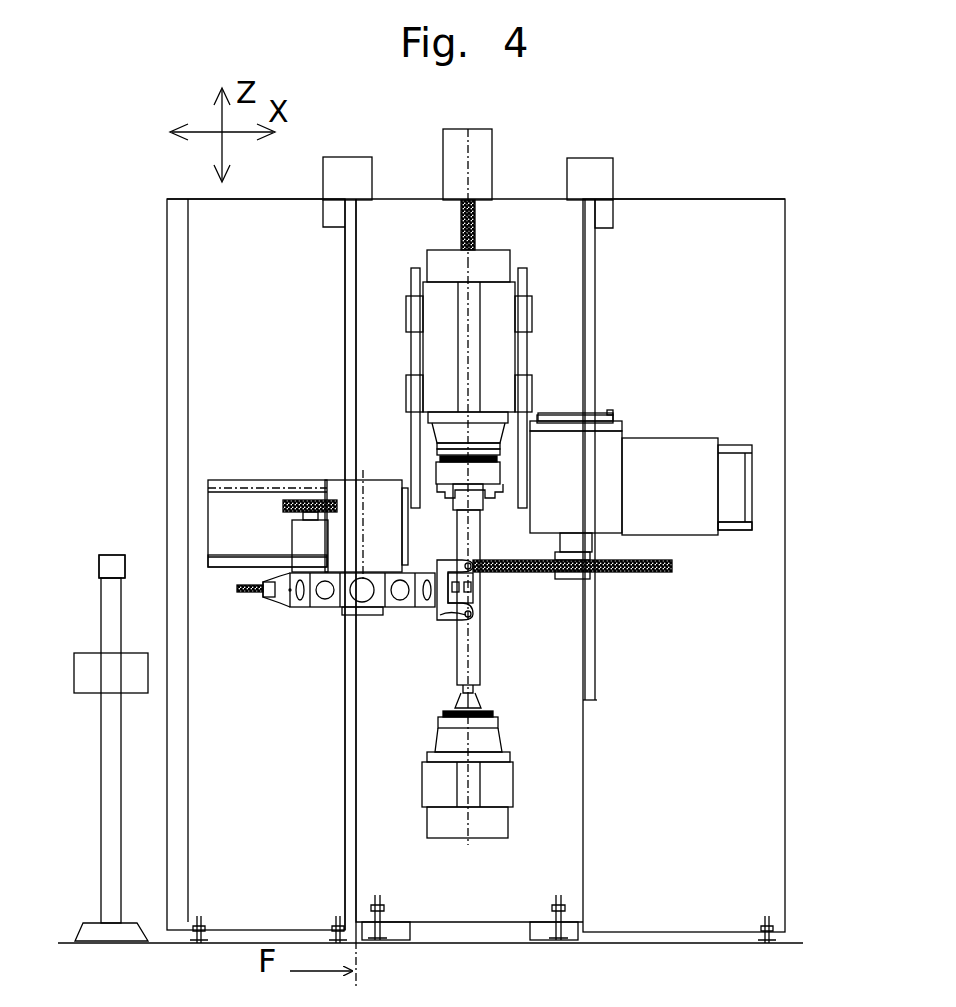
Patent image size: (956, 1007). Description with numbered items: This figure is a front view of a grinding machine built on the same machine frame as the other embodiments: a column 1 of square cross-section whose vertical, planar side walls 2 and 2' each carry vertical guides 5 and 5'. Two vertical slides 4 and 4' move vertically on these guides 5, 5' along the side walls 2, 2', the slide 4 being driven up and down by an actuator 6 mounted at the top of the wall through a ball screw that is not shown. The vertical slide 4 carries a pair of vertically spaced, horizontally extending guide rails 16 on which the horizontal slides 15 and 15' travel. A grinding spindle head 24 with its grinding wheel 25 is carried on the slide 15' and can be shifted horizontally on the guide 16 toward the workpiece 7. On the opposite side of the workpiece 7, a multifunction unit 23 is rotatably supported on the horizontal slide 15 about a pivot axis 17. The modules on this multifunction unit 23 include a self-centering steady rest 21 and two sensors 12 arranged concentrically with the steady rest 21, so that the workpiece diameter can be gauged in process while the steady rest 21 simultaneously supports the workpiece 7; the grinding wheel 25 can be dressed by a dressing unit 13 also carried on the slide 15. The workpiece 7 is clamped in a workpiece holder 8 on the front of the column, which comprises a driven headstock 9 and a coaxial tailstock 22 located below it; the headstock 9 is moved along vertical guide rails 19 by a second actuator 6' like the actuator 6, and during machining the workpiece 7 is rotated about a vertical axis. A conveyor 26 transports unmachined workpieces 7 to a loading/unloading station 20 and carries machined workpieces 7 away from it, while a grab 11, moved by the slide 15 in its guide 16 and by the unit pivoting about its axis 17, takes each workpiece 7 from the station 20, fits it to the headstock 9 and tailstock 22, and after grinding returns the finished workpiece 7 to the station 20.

The column 1 is at (547, 180).
The side wall 2 is at (375, 569).
The side wall 2' is at (684, 565).
The vertical slide 4 is at (230, 523).
The vertical slide 4' is at (748, 457).
The vertical guide rails 5 is at (373, 593).
The vertical guides 5' is at (622, 449).
The actuator 6 is at (364, 172).
The actuator 6' is at (459, 173).
The workpiece 7 is at (480, 657).
The workpiece holder 8 is at (565, 390).
The headstock 9 is at (500, 290).
The grab 11 is at (272, 597).
The sensors 12 is at (466, 614).
The dressing unit 13 is at (285, 503).
The horizontal slide 15 is at (358, 501).
The horizontal slide 15' is at (682, 455).
The guide rails 16 is at (738, 525).
The pivot axis 17 is at (365, 500).
The vertical guide rails 19 is at (528, 368).
The loading/unloading station 20 is at (111, 545).
The self-centering steady rest 21 is at (478, 590).
The tailstock 22 is at (495, 825).
The multifunction unit 23 is at (330, 592).
The grinding spindle head 24 is at (590, 452).
The grinding wheel 25 is at (625, 573).
The conveyor 26 is at (90, 672).